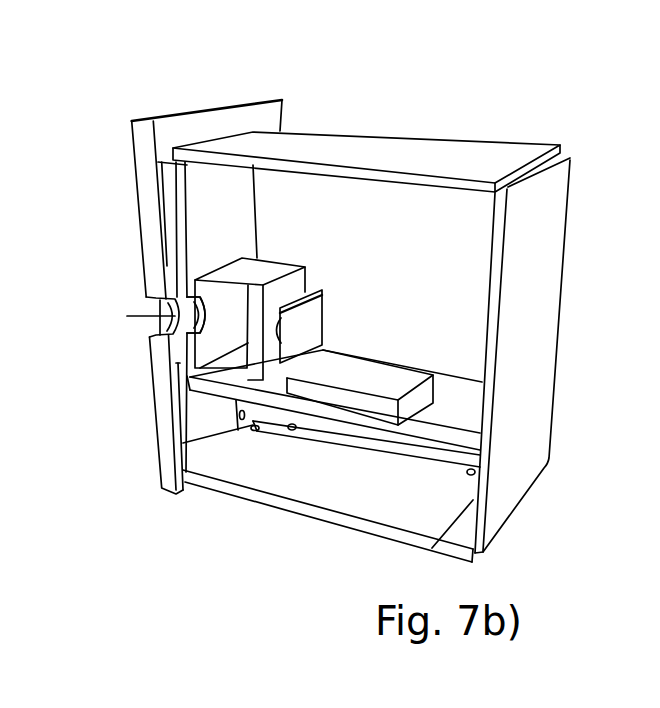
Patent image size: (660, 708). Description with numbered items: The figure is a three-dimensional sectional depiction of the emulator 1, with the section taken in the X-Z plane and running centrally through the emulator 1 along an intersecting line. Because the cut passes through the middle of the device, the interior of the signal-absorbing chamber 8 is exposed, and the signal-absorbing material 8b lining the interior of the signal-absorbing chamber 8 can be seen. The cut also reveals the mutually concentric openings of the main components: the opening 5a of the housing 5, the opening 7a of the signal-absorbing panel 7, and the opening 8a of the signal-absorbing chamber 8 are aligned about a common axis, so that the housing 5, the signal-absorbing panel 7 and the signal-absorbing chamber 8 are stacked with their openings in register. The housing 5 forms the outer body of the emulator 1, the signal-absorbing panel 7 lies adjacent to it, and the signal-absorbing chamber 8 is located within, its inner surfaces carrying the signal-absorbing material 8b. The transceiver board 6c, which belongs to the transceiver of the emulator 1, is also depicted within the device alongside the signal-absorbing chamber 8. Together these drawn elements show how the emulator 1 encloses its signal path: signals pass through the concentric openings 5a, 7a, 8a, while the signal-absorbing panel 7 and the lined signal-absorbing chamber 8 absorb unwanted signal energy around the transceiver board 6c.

The emulator 1 is at (436, 103).
The housing 5 is at (553, 377).
The opening of the housing 5a is at (128, 316).
The transceiver board 6c is at (322, 298).
The signal-absorbing panel 7 is at (209, 110).
The opening of the signal-absorbing panel 7a is at (157, 306).
The signal-absorbing chamber 8 is at (263, 272).
The opening of the signal-absorbing chamber 8a is at (160, 322).
The signal-absorbing material 8b is at (230, 368).